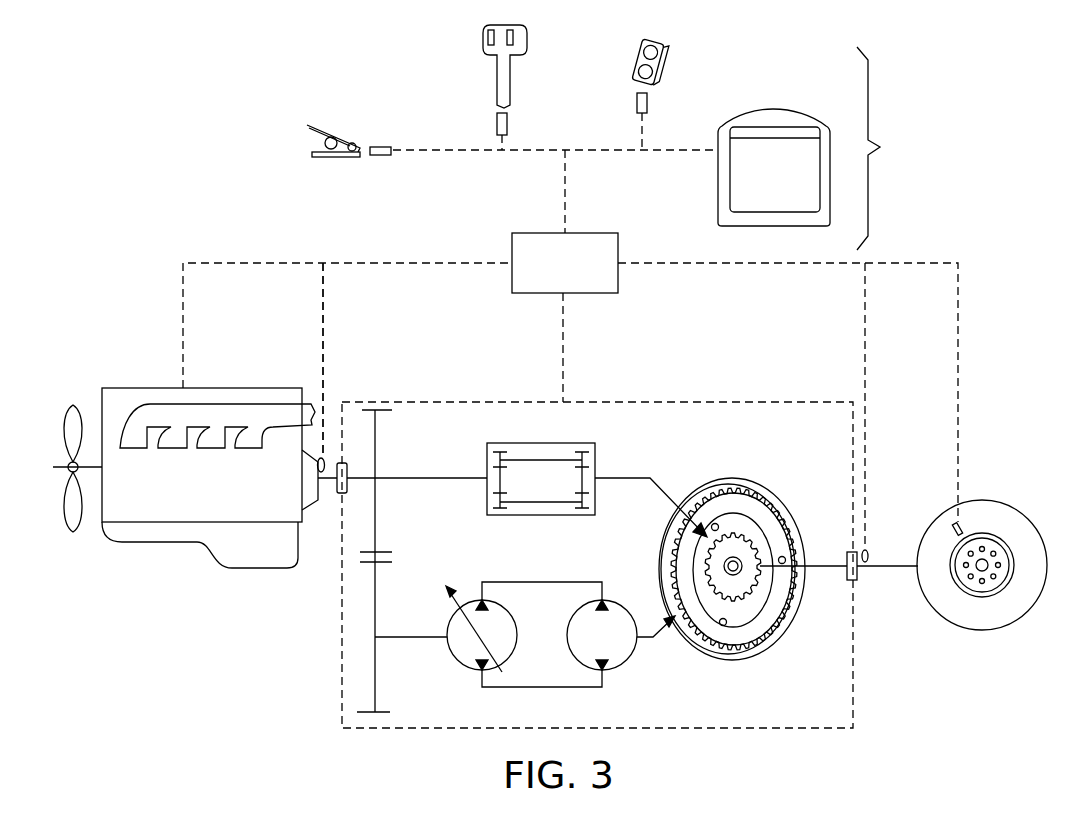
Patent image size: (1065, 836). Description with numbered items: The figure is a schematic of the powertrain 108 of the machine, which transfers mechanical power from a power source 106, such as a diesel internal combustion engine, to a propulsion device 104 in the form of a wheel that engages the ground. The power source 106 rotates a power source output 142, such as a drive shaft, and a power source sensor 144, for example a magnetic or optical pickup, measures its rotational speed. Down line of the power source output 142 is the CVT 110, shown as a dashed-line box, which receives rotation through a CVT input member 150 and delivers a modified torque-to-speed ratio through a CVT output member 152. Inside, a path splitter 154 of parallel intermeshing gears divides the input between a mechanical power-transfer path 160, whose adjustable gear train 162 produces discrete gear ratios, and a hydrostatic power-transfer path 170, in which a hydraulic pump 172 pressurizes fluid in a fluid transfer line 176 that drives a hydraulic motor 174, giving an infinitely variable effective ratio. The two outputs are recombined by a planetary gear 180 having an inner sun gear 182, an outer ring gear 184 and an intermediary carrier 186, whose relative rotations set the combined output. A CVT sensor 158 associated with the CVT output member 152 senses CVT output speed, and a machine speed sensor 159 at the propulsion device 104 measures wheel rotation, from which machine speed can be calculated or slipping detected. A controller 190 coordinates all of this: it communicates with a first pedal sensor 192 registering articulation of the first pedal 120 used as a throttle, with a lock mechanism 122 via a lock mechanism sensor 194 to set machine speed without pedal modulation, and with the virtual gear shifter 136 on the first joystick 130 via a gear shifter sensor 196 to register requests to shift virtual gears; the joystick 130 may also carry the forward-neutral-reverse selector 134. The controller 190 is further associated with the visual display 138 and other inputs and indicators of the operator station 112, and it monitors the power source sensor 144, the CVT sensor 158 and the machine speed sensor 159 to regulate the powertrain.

The propulsion device 104 is at (985, 615).
The power source 106 is at (145, 387).
The powertrain 108 is at (397, 400).
The CVT 110 is at (437, 400).
The operator station 112 is at (897, 148).
The first pedal 120 is at (310, 147).
The lock mechanism 122 is at (668, 66).
The first joystick 130 is at (496, 61).
The forward-neutral-reverse selector 134 is at (488, 33).
The virtual gear shifter 136 is at (515, 33).
The visual display 138 is at (773, 117).
The power source output 142 is at (322, 473).
The power source sensor 144 is at (325, 457).
The CVT input member 150 is at (343, 494).
The CVT output member 152 is at (857, 582).
The path splitter 154 is at (380, 438).
The CVT sensor 158 is at (868, 552).
The machine speed sensor 159 is at (963, 528).
The mechanical power-transfer path 160 is at (597, 474).
The gear train 162 is at (540, 458).
The hydrostatic power-transfer path 170 is at (583, 653).
The hydraulic pump 172 is at (498, 604).
The hydraulic motor 174 is at (570, 650).
The fluid transfer line 176 is at (545, 582).
The planetary gear 180 is at (754, 559).
The sun gear 182 is at (733, 545).
The ring gear 184 is at (755, 650).
The carrier 186 is at (775, 540).
The controller 190 is at (582, 273).
The first pedal sensor 192 is at (377, 147).
The lock mechanism sensor 194 is at (648, 105).
The gear shifter sensor 196 is at (507, 125).